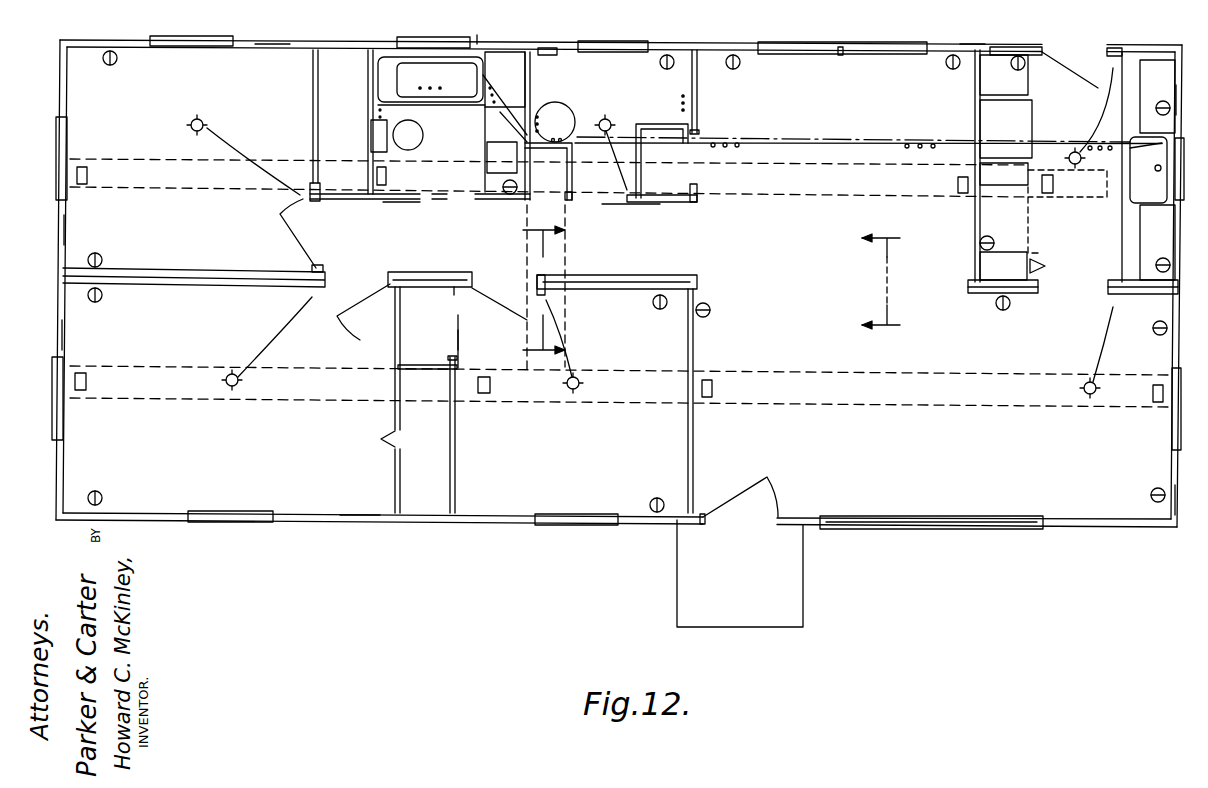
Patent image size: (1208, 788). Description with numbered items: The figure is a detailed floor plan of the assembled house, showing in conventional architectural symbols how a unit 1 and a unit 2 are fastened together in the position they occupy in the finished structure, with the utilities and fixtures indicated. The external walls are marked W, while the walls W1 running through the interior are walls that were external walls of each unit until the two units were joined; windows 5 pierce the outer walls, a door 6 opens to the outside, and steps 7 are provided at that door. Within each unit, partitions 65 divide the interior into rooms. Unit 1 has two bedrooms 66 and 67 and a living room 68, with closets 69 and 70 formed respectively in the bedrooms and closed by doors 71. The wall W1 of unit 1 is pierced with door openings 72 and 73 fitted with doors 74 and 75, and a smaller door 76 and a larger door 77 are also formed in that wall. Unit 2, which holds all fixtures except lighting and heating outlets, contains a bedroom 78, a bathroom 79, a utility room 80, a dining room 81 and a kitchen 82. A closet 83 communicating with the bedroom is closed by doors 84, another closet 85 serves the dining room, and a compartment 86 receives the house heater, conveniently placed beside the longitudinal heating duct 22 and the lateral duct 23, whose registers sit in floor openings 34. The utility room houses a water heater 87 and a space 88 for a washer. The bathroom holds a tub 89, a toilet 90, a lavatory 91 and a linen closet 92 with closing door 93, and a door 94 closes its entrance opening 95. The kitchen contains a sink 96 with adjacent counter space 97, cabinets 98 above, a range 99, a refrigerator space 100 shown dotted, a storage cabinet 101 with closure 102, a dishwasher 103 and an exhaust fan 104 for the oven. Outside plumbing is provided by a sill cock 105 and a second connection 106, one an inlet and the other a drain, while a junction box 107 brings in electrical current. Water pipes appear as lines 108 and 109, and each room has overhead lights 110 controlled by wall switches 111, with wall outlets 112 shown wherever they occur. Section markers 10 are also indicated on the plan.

The unit 1 is at (1097, 534).
The unit 2 is at (972, 42).
The windows 5 is at (208, 20).
The door 6 is at (750, 496).
The steps 7 is at (788, 597).
The section line 10- 10 is at (530, 293).
The longitudinal heating duct 22 is at (805, 197).
The lateral duct 23 is at (566, 255).
The openings 34 is at (387, 178).
The partitions 65 is at (370, 87).
The bedroom 66 is at (273, 466).
The bedroom 67 is at (587, 463).
The living room 68 is at (1000, 473).
The closet 69 is at (433, 456).
The closet 70 is at (437, 343).
The doors 71 is at (462, 347).
The door opening 72 is at (375, 278).
The door opening 73 is at (492, 280).
The door 74 is at (350, 310).
The door 75 is at (498, 305).
The door 76 is at (1053, 287).
The door 77 is at (800, 290).
The bedroom 78 is at (197, 223).
The bathroom 79 is at (467, 138).
The utility room 80 is at (628, 100).
The dining room 81 is at (826, 125).
The kitchen 82 is at (1085, 121).
The closet 83 is at (353, 141).
The doors 84 is at (298, 117).
The closet 85 is at (677, 168).
The closet or compartment 86 is at (555, 190).
The water heater 87 is at (566, 131).
The space 88 is at (672, 88).
The tub 89 is at (447, 75).
The toilet 90 is at (417, 144).
The lavatory 91 is at (510, 166).
The linen closet 92 is at (515, 85).
The closing door 93 is at (507, 112).
The door 94 is at (428, 200).
The opening 95 is at (460, 199).
The sink 96 is at (1158, 198).
The counter space 97 is at (1127, 238).
The cabinets 98 is at (1170, 95).
The range 99 is at (1018, 138).
The space for a refrigerator 100 is at (990, 214).
The storage cabinet or closet 101 is at (1010, 276).
The door or other closure 102 is at (1040, 266).
The dishwasher 103 is at (1004, 75).
The exhaust fan 104 is at (995, 52).
The sill cock or outside connection 105 is at (1162, 143).
The second connection 106 is at (480, 43).
The junction box 107 is at (592, 18).
The water pipe lines 108 is at (897, 137).
The water pipe lines 109 is at (870, 147).
The overhead lights 110 is at (613, 112).
The wall switch 111 is at (624, 190).
The wall outlets 112 is at (512, 195).
The external walls W is at (263, 43).
The walls W1 is at (637, 247).